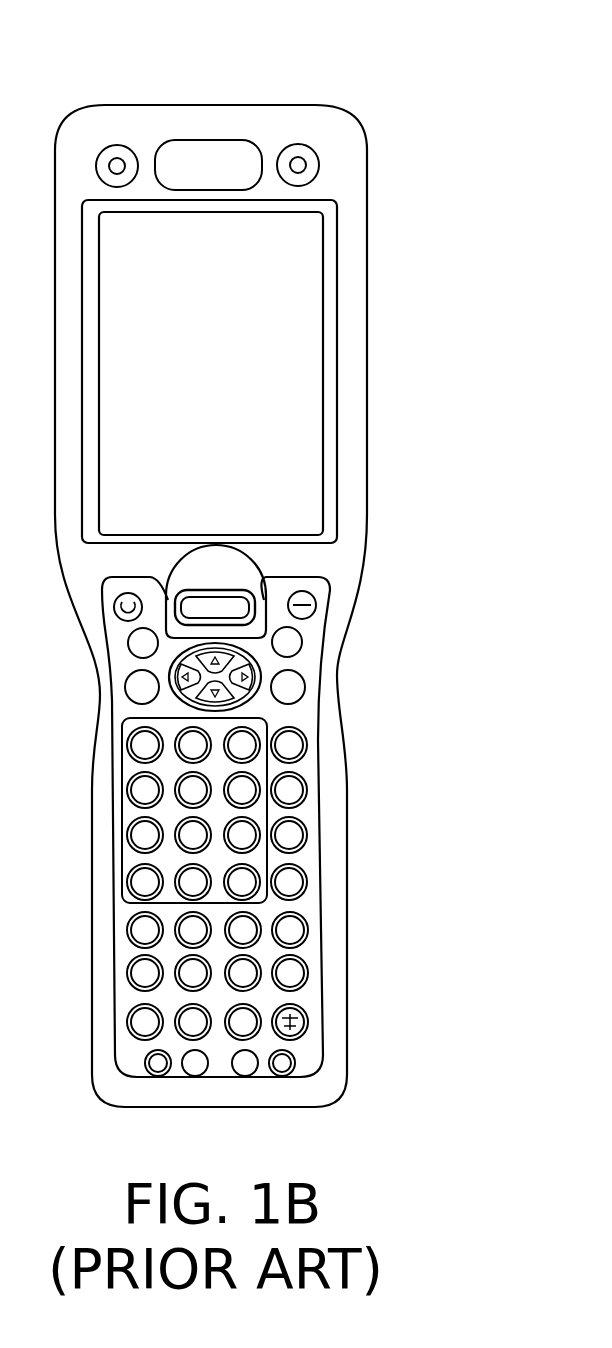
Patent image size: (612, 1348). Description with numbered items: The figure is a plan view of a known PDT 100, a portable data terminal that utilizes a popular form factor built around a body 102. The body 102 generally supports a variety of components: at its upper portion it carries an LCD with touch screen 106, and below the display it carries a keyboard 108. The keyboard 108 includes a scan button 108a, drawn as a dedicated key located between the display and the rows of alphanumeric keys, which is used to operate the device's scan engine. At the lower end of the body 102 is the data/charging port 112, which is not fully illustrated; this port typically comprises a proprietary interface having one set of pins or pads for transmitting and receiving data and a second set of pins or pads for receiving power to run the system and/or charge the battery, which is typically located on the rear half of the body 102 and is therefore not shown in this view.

The PDT 100 is at (352, 68).
The body 102 is at (372, 312).
The LCD with touch screen 106 is at (240, 362).
The keyboard 108 is at (308, 715).
The scan button 108a is at (253, 582).
The data/charging port 112 is at (237, 1108).